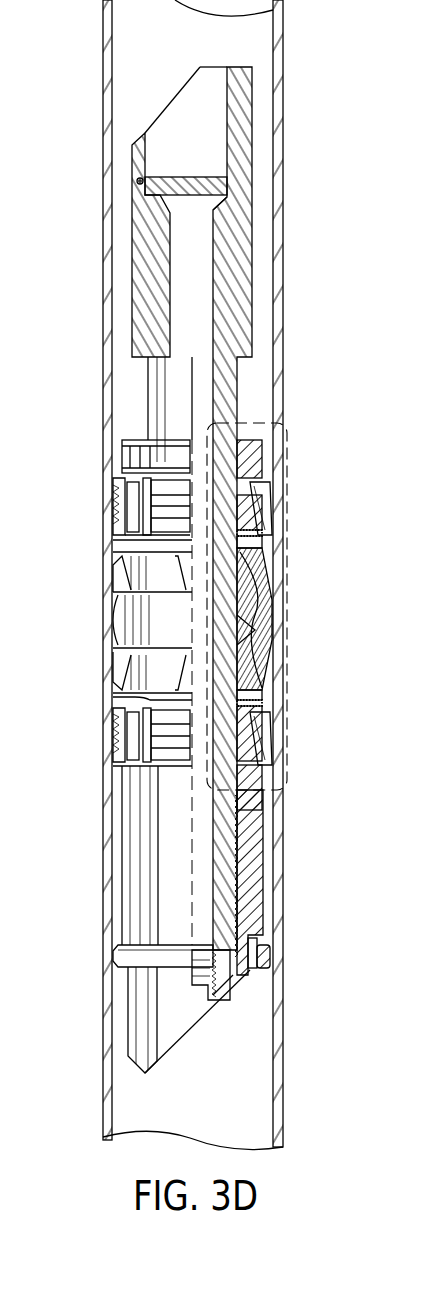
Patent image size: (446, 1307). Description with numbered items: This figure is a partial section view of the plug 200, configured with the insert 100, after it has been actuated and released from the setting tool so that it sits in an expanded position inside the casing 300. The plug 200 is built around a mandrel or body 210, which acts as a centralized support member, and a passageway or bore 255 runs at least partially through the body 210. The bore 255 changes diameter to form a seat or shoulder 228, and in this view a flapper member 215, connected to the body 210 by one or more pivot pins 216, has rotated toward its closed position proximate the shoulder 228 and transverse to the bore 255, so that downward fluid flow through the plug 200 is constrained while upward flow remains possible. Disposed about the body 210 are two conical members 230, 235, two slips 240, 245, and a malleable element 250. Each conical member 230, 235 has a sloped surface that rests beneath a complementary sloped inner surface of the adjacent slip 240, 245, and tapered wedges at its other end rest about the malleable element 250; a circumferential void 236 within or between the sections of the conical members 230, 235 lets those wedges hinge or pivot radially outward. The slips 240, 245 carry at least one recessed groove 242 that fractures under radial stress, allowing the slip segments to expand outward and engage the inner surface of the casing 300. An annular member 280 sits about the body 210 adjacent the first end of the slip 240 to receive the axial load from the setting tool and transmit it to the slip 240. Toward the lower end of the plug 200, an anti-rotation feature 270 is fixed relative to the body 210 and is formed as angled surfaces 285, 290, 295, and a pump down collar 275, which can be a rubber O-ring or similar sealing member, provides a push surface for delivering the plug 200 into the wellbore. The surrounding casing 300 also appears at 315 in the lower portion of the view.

The insert 100 is at (190, 977).
The plug 200 is at (146, 70).
The body 210 is at (150, 383).
The flapper member 215 is at (215, 177).
The pivot pins 216 is at (137, 180).
The shoulder 228 is at (230, 204).
The conical member 230 is at (255, 518).
The conical member 235 is at (250, 697).
The circumferential void 236 is at (135, 700).
The slip 240 is at (117, 495).
The recessed groove 242 is at (125, 757).
The slip 245 is at (117, 728).
The malleable element 250 is at (252, 632).
The bore 255 is at (205, 286).
The anti-rotation feature 270 is at (248, 865).
The pump down collar 275 is at (272, 952).
The annular member 280 is at (122, 455).
The angled surface 285 is at (228, 993).
The angled surface 290 is at (140, 1065).
The angled surface 295 is at (150, 128).
The casing 300 is at (283, 48).
The casing bore 315 is at (272, 1097).